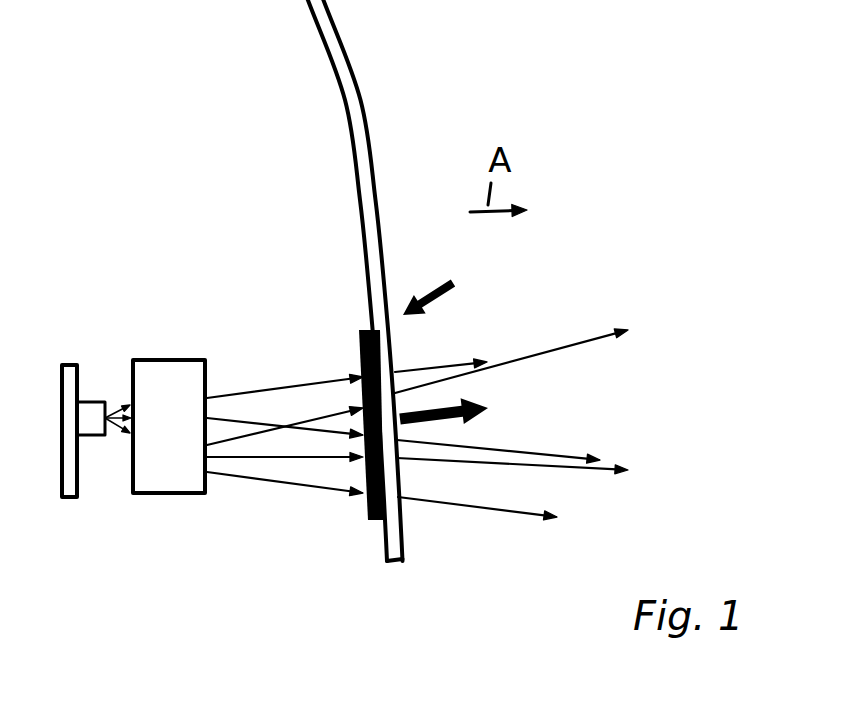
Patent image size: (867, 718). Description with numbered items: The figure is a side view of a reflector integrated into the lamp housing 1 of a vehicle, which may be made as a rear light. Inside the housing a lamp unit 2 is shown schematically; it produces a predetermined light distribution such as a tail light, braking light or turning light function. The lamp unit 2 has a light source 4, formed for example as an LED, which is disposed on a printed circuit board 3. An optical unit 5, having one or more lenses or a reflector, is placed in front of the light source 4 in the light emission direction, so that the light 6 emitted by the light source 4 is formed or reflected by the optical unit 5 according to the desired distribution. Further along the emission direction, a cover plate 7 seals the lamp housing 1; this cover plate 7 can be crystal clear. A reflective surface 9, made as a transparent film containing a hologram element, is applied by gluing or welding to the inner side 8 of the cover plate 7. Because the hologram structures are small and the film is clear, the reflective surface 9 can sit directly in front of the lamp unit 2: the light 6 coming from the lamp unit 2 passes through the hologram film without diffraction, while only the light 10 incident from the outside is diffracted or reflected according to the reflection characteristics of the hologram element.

The lamp housing 1 is at (213, 162).
The lamp unit 2 is at (199, 627).
The printed circuit board 3 is at (57, 492).
The light source 4 is at (92, 398).
The optical unit 5 is at (182, 352).
The light 6 is at (265, 383).
The cover plate 7 is at (379, 190).
The inner side 8 is at (358, 229).
The reflective surface 9 is at (372, 517).
The light incident from the outside 10 is at (450, 405).